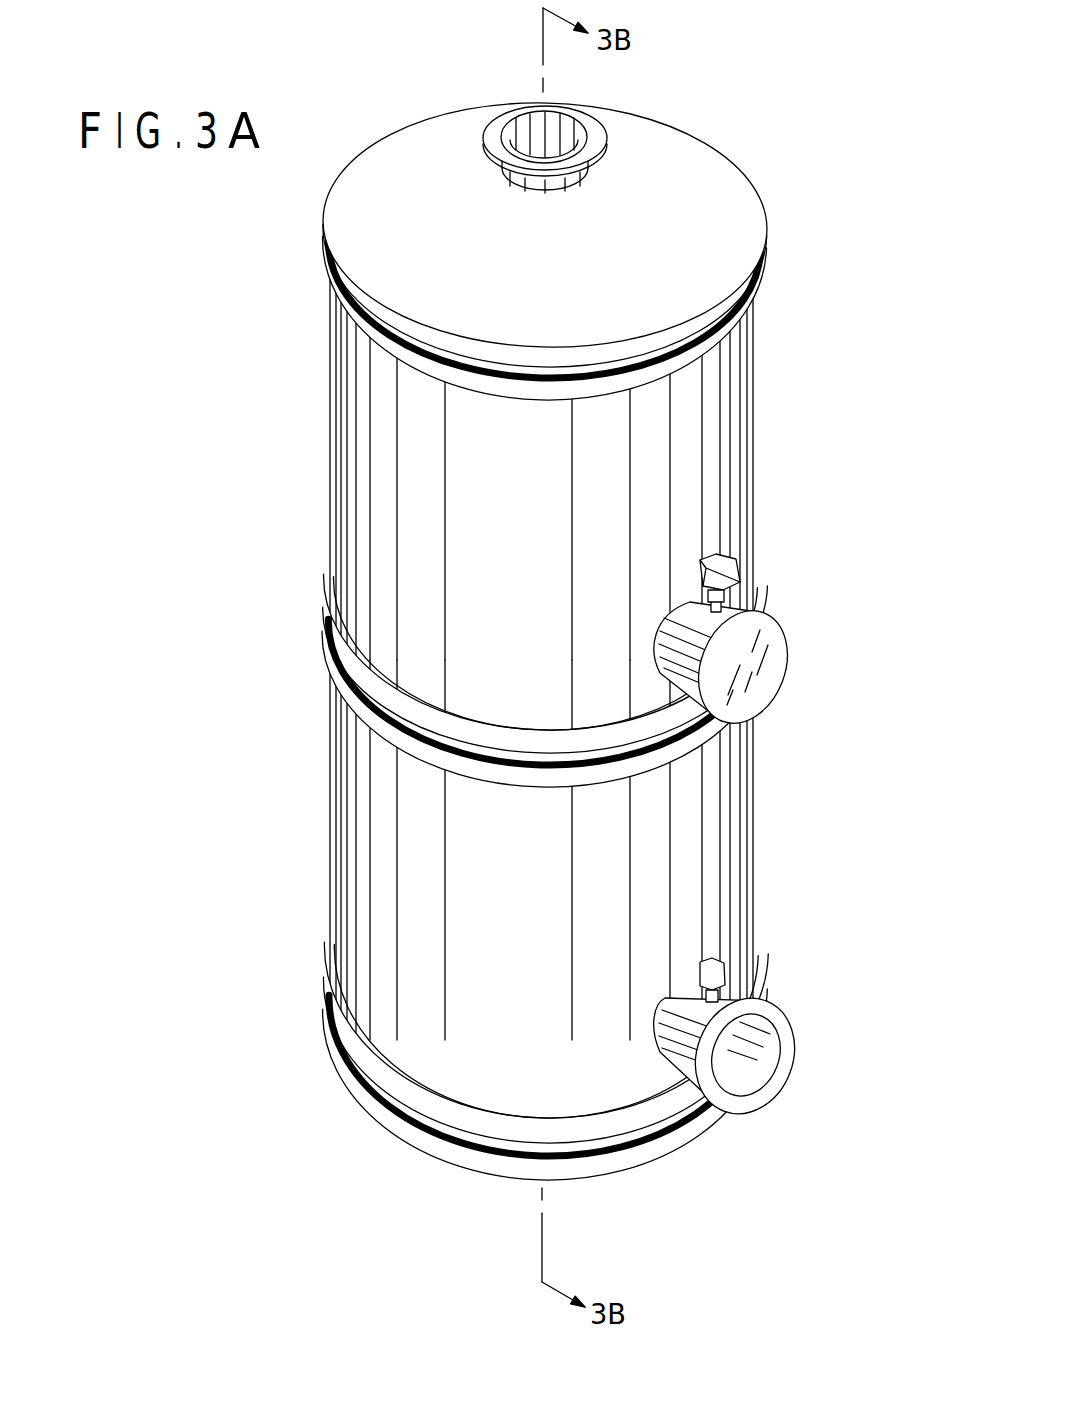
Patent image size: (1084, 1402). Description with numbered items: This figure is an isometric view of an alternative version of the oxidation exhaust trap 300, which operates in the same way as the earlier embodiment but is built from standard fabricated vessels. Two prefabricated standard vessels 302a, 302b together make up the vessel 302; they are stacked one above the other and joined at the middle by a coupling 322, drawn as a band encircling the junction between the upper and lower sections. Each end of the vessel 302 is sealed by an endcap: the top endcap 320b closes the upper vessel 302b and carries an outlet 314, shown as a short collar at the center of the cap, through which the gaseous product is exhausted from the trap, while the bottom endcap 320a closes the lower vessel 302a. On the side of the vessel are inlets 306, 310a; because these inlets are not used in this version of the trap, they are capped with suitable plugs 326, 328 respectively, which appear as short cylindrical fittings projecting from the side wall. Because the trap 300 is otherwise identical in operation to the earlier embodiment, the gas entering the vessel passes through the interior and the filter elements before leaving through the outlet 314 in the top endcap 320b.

The oxidation exhaust trap 300 is at (852, 148).
The vessel 302 is at (272, 510).
The fabricated vessel 302a is at (752, 856).
The fabricated vessel 302b is at (738, 455).
The inlet 306 is at (778, 1050).
The inlet 310a is at (722, 985).
The outlet 314 is at (588, 134).
The endcap 320a is at (660, 1150).
The endcap 320b is at (712, 216).
The coupling 322 is at (330, 668).
The plug 326 is at (766, 680).
The plug 328 is at (728, 563).